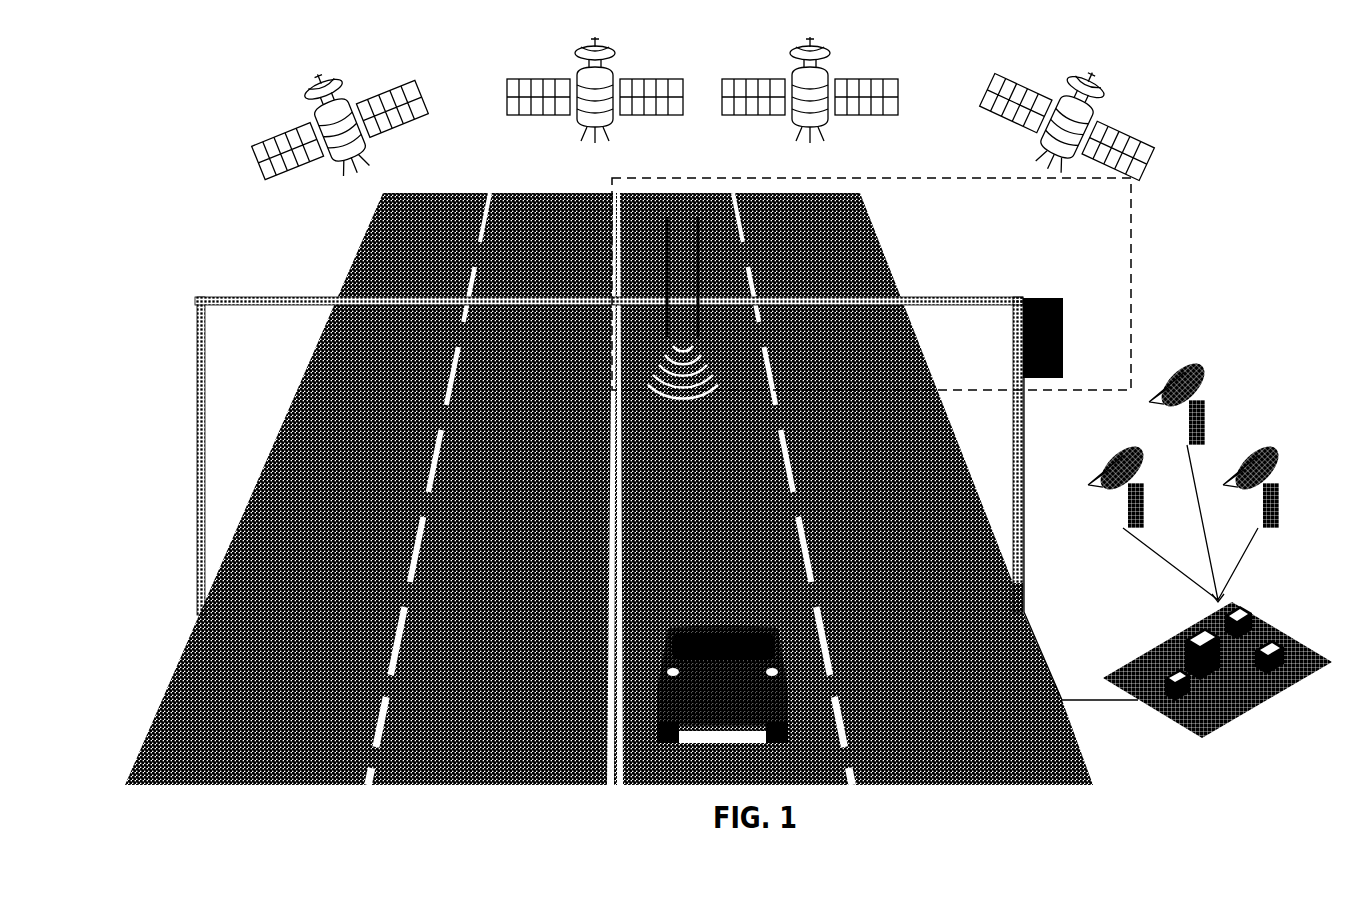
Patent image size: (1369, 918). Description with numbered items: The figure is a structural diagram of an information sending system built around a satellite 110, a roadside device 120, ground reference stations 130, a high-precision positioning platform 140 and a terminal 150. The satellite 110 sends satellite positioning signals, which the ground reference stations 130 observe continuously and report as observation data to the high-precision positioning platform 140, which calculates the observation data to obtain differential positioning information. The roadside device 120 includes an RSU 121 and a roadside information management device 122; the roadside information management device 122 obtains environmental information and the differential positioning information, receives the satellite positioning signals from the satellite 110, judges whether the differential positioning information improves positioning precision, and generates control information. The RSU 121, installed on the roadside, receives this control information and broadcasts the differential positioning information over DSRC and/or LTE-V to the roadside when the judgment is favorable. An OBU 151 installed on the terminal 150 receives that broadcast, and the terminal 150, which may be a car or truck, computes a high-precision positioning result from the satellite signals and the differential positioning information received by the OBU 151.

The satellite 110 is at (696, 120).
The roadside device 120 is at (871, 288).
The RSU 121 is at (680, 308).
The roadside information management device 122 is at (1031, 295).
The ground reference stations 130 is at (1217, 479).
The high-precision positioning platform 140 is at (1217, 694).
The terminal 150 is at (718, 642).
The OBU 151 is at (719, 599).